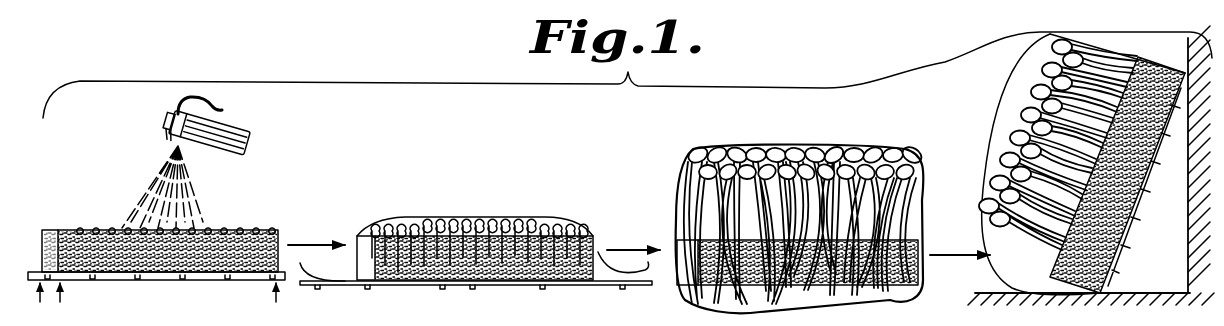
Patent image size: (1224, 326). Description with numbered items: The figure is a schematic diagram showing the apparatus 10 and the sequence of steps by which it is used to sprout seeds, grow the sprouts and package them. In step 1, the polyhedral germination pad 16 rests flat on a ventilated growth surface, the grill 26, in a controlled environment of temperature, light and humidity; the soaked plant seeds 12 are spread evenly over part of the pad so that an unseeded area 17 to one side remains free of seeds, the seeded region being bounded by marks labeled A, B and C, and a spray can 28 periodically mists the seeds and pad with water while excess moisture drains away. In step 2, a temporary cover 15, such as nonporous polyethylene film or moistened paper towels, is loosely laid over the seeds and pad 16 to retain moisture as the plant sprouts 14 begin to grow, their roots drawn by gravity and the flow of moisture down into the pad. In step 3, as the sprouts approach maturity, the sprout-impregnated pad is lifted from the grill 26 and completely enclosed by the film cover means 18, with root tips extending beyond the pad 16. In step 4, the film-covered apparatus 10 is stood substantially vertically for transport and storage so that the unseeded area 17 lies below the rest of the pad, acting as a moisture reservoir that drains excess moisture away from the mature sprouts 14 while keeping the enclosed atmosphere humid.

The step 1 is at (124, 158).
The step 2 is at (440, 155).
The step 3 is at (740, 128).
The step 4 is at (1010, 92).
The apparatus 10 is at (566, 212).
The plant seeds 12 is at (248, 228).
The plant sprouts 14 is at (488, 218).
The temporary cover 15 is at (596, 258).
The germination pad 16 is at (108, 250).
The unseeded area 17 is at (50, 232).
The cover means 18 is at (860, 150).
The grill 26 is at (160, 282).
The spray can 28 is at (217, 132).